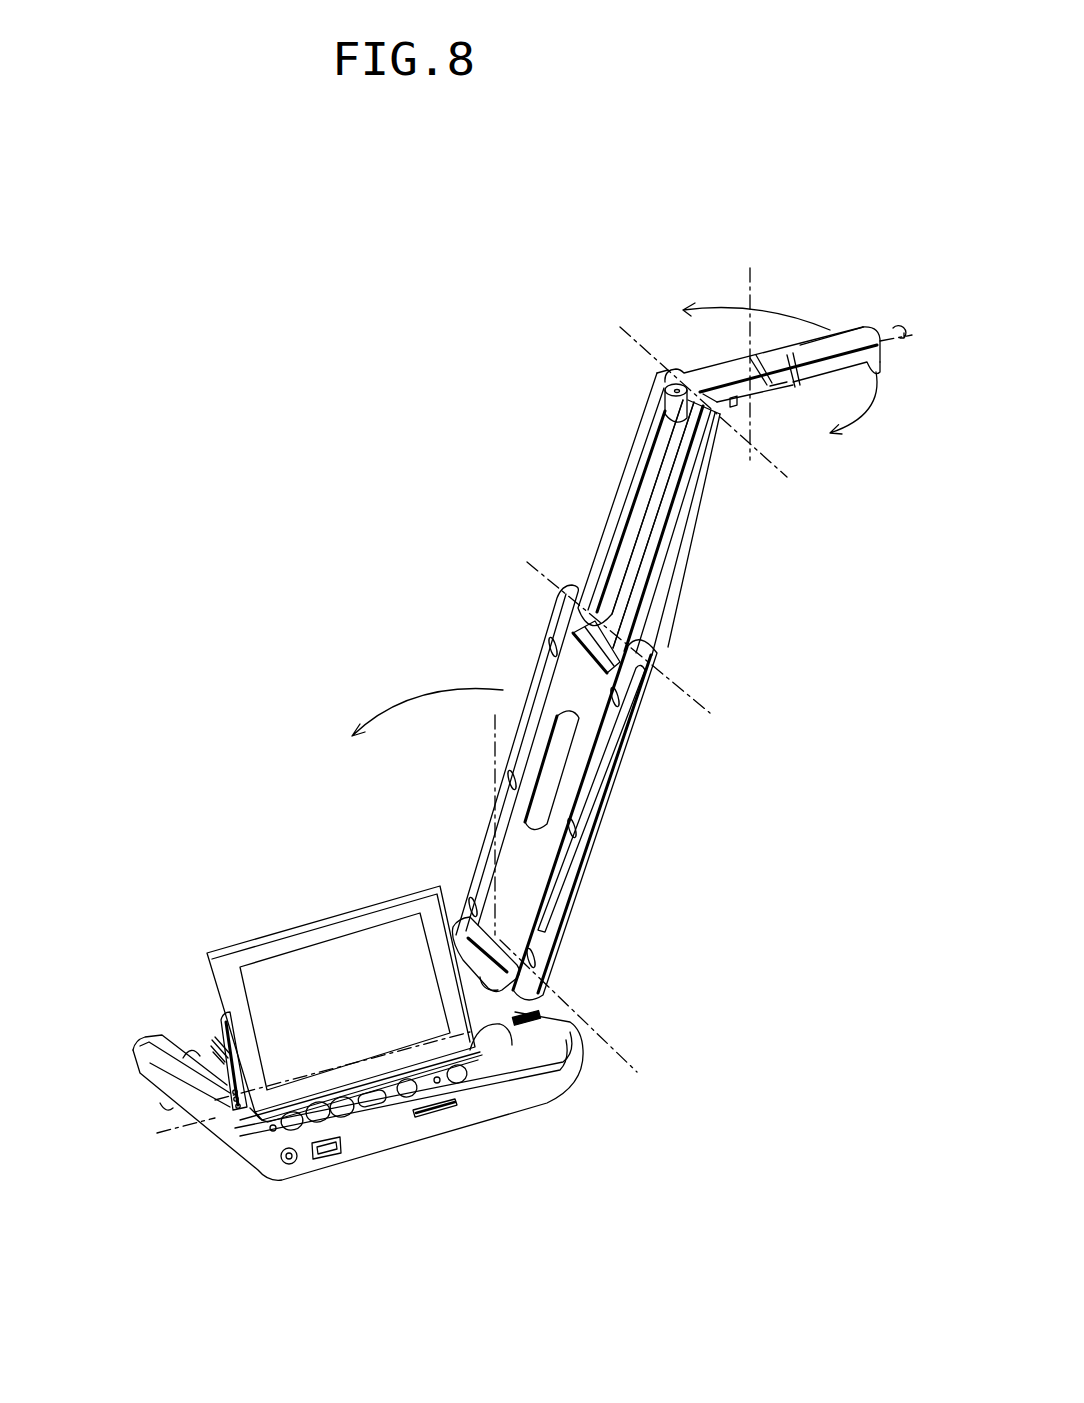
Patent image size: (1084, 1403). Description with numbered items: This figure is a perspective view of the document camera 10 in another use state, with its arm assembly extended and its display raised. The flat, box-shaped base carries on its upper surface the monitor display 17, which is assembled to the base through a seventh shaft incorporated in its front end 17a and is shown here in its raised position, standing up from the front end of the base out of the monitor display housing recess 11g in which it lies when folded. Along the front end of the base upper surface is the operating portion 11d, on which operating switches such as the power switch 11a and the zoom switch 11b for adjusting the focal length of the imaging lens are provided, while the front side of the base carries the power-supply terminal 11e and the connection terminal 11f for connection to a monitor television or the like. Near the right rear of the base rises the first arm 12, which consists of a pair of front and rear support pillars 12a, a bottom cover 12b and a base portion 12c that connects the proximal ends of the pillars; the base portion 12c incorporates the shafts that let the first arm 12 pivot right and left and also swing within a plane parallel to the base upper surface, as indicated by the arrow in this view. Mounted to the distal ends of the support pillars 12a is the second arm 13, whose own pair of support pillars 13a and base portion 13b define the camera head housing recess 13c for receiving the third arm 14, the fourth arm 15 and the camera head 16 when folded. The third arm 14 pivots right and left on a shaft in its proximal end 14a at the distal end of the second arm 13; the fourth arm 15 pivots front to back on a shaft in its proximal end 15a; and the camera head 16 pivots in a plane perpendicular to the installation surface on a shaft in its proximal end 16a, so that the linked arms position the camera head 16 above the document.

The document camera 10 is at (208, 856).
The power switch 11a is at (289, 1121).
The zoom switch 11b is at (343, 1110).
The operating portion 11d is at (483, 1068).
The power-supply terminal 11e is at (290, 1162).
The connection terminal 11f is at (323, 1155).
The monitor display housing recess 11g is at (213, 1063).
The first arm 12 is at (476, 878).
The support pillars 12a is at (490, 863).
The bottom cover 12b is at (580, 690).
The base portion 12c is at (497, 957).
The second arm 13 is at (618, 488).
The support pillars 13a is at (644, 440).
The base portion 13b is at (605, 638).
The camera head housing recess 13c is at (613, 560).
The third arm 14 is at (718, 378).
The proximal end 14a is at (673, 405).
The fourth arm 15 is at (775, 358).
The proximal end 15a is at (780, 393).
The camera head 16 is at (841, 340).
The proximal end 16a is at (807, 358).
The monitor display 17 is at (300, 983).
The front end 17a is at (257, 1068).